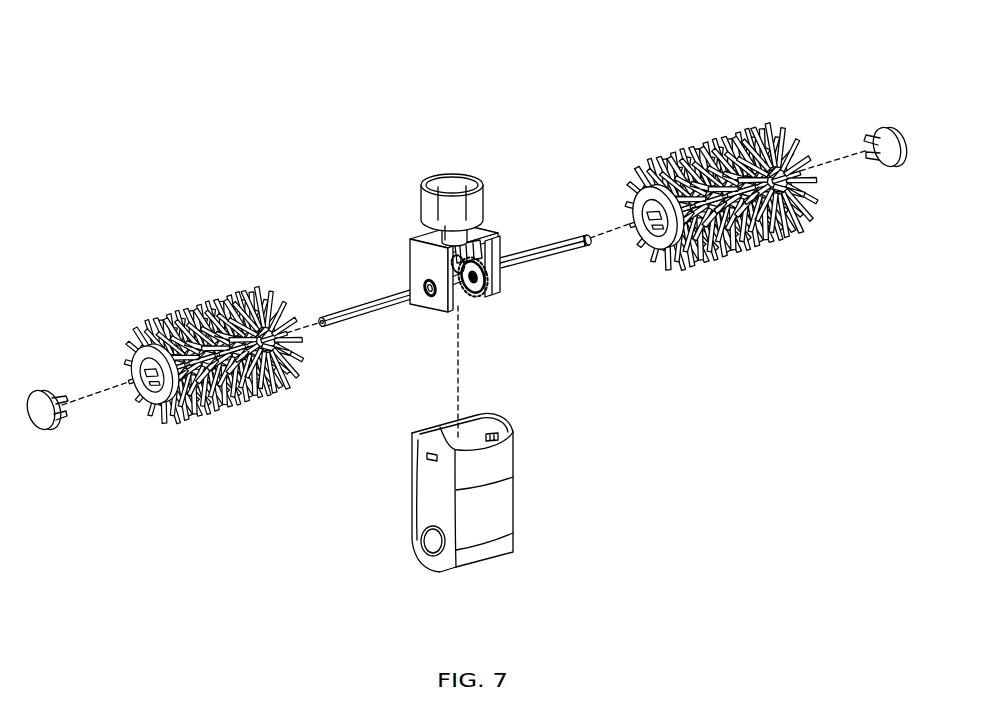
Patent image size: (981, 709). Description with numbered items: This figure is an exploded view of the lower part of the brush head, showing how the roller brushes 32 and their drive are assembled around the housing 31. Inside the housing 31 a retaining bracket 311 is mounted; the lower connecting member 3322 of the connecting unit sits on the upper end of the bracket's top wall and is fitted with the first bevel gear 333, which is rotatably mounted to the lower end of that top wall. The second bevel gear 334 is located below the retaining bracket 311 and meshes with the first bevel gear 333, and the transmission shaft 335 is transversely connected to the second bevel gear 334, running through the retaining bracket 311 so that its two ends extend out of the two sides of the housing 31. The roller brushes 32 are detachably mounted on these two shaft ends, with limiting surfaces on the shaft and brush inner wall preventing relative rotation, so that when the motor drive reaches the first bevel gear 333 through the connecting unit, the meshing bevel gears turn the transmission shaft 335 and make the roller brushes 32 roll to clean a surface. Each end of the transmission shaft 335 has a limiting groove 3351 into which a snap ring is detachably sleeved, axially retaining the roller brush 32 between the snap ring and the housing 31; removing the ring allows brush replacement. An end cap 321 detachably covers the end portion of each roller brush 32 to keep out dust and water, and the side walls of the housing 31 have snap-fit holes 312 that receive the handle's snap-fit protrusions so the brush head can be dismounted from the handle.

The housing 31 is at (527, 510).
The retaining bracket 311 is at (402, 255).
The snap-fit hole 312 is at (428, 460).
The roller brush 32 is at (190, 282).
The end cap 321 is at (56, 432).
The first bevel gear 333 is at (487, 237).
The lower connecting member 3322 is at (463, 185).
The second bevel gear 334 is at (480, 292).
The transmission shaft 335 is at (385, 300).
The limiting groove 3351 is at (335, 327).